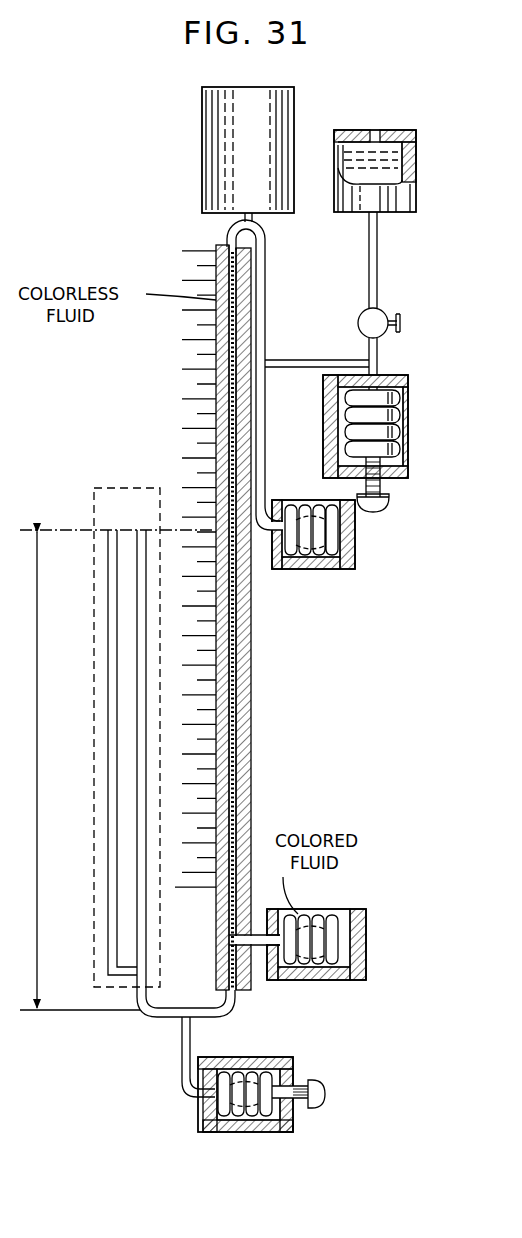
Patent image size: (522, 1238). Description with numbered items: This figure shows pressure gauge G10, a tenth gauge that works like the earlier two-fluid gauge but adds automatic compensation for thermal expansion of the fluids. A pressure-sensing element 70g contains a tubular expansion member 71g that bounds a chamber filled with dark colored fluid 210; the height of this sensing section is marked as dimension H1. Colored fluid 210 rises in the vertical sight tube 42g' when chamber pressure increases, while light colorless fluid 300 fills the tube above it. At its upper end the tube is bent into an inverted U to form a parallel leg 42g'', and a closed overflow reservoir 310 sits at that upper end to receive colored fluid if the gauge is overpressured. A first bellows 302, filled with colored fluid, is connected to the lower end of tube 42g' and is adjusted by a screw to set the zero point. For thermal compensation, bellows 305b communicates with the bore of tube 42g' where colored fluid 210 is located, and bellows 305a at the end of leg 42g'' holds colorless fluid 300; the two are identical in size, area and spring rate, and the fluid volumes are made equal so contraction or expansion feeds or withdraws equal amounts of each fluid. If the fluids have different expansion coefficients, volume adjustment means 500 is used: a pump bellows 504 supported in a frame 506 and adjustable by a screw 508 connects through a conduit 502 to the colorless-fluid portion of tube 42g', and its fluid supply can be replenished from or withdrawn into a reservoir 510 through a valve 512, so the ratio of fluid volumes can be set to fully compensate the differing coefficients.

The closed reservoir 310 is at (205, 170).
The container or reservoir 510 is at (418, 176).
The leg of tube 42g'' is at (277, 375).
The conduit 502 is at (276, 362).
The valve 512 is at (381, 306).
The frame 506 is at (397, 379).
The bellows 504 is at (400, 406).
The volume adjustment means 500 is at (407, 428).
The screw 508 is at (391, 491).
The bellows 305a is at (312, 570).
The pressure-sensing element 70g is at (138, 486).
The tubular member 71g is at (108, 690).
The height dimension H1 is at (117, 770).
The colorless fluid 300 is at (241, 683).
The pressure gauge G10 is at (353, 726).
The vertical tube 42g' is at (284, 761).
The bellows 305b is at (339, 910).
The colored fluid 210 is at (230, 940).
The first bellows 302 is at (258, 1134).